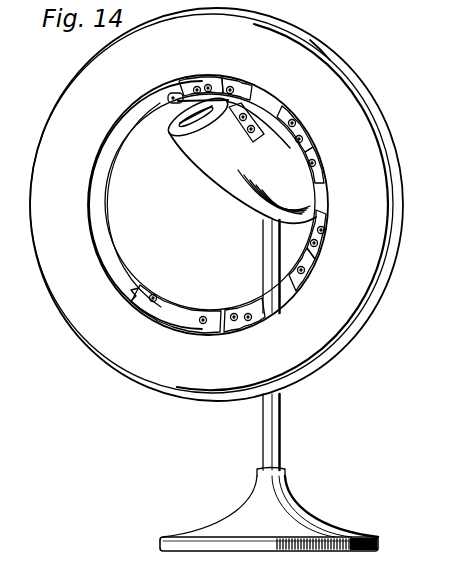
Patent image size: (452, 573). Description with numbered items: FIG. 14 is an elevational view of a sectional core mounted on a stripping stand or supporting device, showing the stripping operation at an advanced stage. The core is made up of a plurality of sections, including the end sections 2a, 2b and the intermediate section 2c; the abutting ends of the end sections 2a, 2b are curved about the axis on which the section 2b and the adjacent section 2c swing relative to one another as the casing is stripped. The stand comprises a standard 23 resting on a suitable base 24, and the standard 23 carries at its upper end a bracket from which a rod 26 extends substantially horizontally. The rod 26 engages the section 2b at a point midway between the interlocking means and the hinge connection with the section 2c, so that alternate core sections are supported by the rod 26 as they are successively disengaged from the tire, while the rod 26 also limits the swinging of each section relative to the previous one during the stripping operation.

The end section 2a is at (153, 390).
The end section 2b is at (320, 53).
The intermediate section 2c is at (205, 178).
The rod 26 is at (272, 128).
The standard 23 is at (281, 443).
The base 24 is at (310, 526).